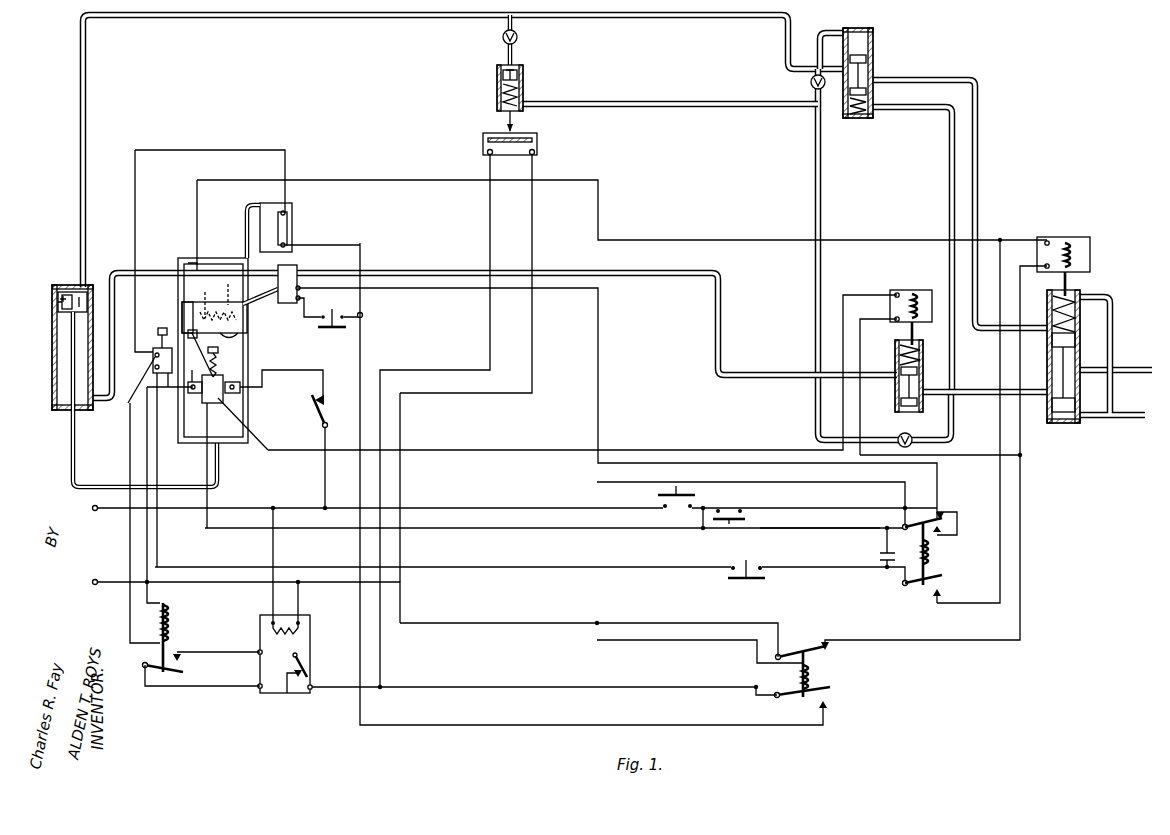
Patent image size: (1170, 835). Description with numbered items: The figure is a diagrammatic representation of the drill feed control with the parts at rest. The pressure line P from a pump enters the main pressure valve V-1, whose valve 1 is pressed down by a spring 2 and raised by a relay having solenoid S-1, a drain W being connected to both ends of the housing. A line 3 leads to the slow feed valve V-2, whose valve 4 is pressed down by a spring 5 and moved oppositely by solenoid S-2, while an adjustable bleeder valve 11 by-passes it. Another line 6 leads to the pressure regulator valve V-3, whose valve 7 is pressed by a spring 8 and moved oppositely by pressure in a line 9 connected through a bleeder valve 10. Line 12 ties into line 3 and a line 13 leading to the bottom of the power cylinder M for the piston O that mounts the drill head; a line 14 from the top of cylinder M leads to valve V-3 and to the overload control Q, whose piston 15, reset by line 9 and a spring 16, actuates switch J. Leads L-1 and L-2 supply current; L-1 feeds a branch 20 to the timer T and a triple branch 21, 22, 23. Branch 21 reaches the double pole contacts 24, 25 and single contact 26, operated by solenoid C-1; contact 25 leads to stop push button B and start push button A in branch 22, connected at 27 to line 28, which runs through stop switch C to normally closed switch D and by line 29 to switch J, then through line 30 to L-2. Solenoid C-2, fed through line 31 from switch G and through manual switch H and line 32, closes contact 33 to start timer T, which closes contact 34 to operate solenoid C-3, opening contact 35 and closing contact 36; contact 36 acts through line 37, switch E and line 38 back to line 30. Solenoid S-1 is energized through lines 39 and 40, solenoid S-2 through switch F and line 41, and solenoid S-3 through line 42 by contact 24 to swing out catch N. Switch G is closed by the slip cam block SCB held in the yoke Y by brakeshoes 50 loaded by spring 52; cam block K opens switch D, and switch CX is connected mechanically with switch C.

The valve 1 is at (1072, 378).
The spring 2 is at (1068, 331).
The line 3 is at (990, 395).
The valve 4 is at (915, 388).
The spring 5 is at (918, 360).
The line 6 is at (978, 159).
The valve 7 is at (862, 72).
The spring 8 is at (866, 106).
The line 9 is at (822, 153).
The bleeder valve 10 is at (811, 83).
The adjustable bleeder valve 11 is at (930, 441).
The line 12 is at (949, 159).
The line 13 is at (114, 270).
The line 14 is at (368, 17).
The piston 15 is at (497, 80).
The spring 16 is at (497, 108).
The branch 20 is at (274, 549).
The branch 21 is at (632, 482).
The branch 22 is at (640, 512).
The branch 23 is at (598, 553).
The contact 24 is at (946, 520).
The contact 25 is at (958, 541).
The single contact 26 is at (942, 596).
The connection point 27 is at (700, 530).
The line 28 is at (800, 529).
The line 29 is at (401, 484).
The line 30 is at (130, 443).
The line 31 is at (147, 465).
The line 32 is at (305, 370).
The contact 33 is at (182, 658).
The contact 34 is at (306, 673).
The contact 35 is at (830, 645).
The contact 36 is at (827, 706).
The line 37 is at (516, 726).
The line 38 is at (208, 152).
The line 39 is at (999, 482).
The line 40 is at (980, 641).
The line 41 is at (516, 452).
The line 42 is at (598, 408).
The spring-loaded brakeshoes 50 is at (182, 323).
The spring 52 is at (204, 299).
The start push button A is at (676, 507).
The stop push button B is at (746, 516).
The stop switch C is at (757, 581).
The normally closed switch D is at (160, 447).
The normally closed switch E is at (262, 192).
The single pole double throw switch F is at (218, 362).
The switch G is at (227, 449).
The normally closed manual switch H is at (327, 420).
The switch J is at (538, 150).
The adjustable cam block K is at (182, 285).
The power cylinder M is at (52, 388).
The catch N is at (256, 303).
The piston O is at (52, 304).
The pressure line P is at (1134, 368).
The overload control Q is at (520, 76).
The timer T is at (285, 637).
The drain W is at (1134, 413).
The yoke Y is at (246, 410).
The switch CX is at (340, 330).
The slip cam block SCB is at (240, 336).
The solenoid C-1 is at (935, 557).
The solenoid C-2 is at (174, 626).
The solenoid C-3 is at (812, 669).
The lead L-1 is at (515, 500).
The lead L-2 is at (247, 593).
The solenoid S-1 is at (1091, 255).
The solenoid S-2 is at (902, 290).
The solenoid S-3 is at (298, 268).
The main pressure valve V-1 is at (1065, 423).
The slow feed valve V-2 is at (897, 405).
The pressure regulator valve V-3 is at (874, 38).